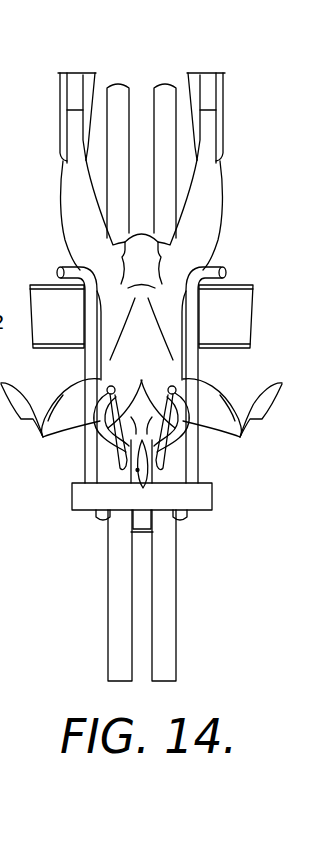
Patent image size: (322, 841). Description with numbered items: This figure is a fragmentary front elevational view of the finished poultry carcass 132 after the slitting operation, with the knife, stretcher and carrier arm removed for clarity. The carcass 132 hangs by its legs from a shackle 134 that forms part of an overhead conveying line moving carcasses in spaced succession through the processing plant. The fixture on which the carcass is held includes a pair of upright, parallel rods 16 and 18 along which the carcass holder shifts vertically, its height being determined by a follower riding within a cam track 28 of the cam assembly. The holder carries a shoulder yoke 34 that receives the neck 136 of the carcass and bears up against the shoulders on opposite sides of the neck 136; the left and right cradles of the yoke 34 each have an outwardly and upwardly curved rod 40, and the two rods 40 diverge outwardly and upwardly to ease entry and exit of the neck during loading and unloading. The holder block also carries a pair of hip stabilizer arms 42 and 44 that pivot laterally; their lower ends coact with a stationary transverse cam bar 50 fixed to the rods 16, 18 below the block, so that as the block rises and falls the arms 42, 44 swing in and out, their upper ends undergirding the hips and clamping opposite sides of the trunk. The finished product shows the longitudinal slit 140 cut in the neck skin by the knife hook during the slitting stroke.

The shackle 134 is at (62, 86).
The poultry carcass 132 is at (228, 242).
The cam track 28 is at (38, 302).
The hip stabilizer arm 42 is at (83, 330).
The hip stabilizer arm 44 is at (201, 330).
The shoulder yoke 34 is at (141, 428).
The curved rod 40 is at (142, 381).
The longitudinal slit 140 is at (127, 472).
The neck 136 is at (147, 493).
The cam bar 50 is at (78, 493).
The upright rod 16 is at (112, 657).
The upright rod 18 is at (172, 657).